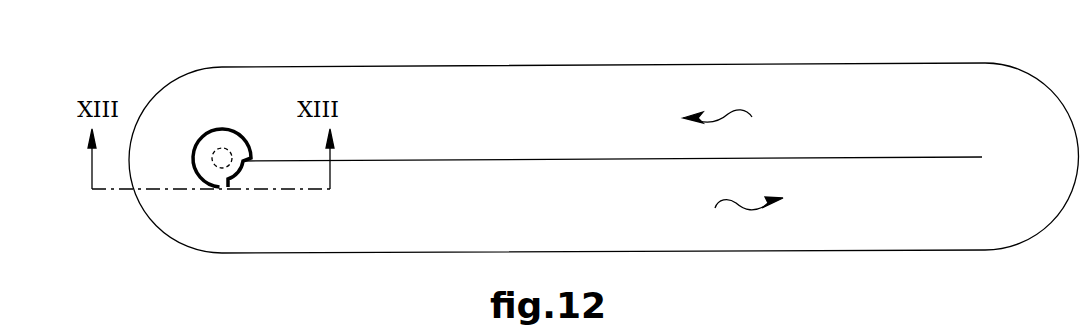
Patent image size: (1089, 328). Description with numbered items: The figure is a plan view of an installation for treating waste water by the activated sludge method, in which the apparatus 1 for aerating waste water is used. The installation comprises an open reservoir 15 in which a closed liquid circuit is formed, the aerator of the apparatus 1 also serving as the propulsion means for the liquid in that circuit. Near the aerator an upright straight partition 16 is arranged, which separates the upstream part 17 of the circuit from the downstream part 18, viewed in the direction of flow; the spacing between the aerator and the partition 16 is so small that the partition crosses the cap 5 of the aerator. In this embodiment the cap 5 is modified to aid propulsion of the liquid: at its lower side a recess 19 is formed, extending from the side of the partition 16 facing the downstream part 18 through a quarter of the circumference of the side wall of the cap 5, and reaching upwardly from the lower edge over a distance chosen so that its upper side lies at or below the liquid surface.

The apparatus for aerating waste water 1 is at (240, 113).
The cap 5 is at (216, 128).
The open reservoir 15 is at (883, 63).
The upright straight partition 16 is at (435, 158).
The upstream part of the circuit 17 is at (630, 85).
The downstream part of the circuit 18 is at (380, 215).
The recess 19 is at (250, 172).